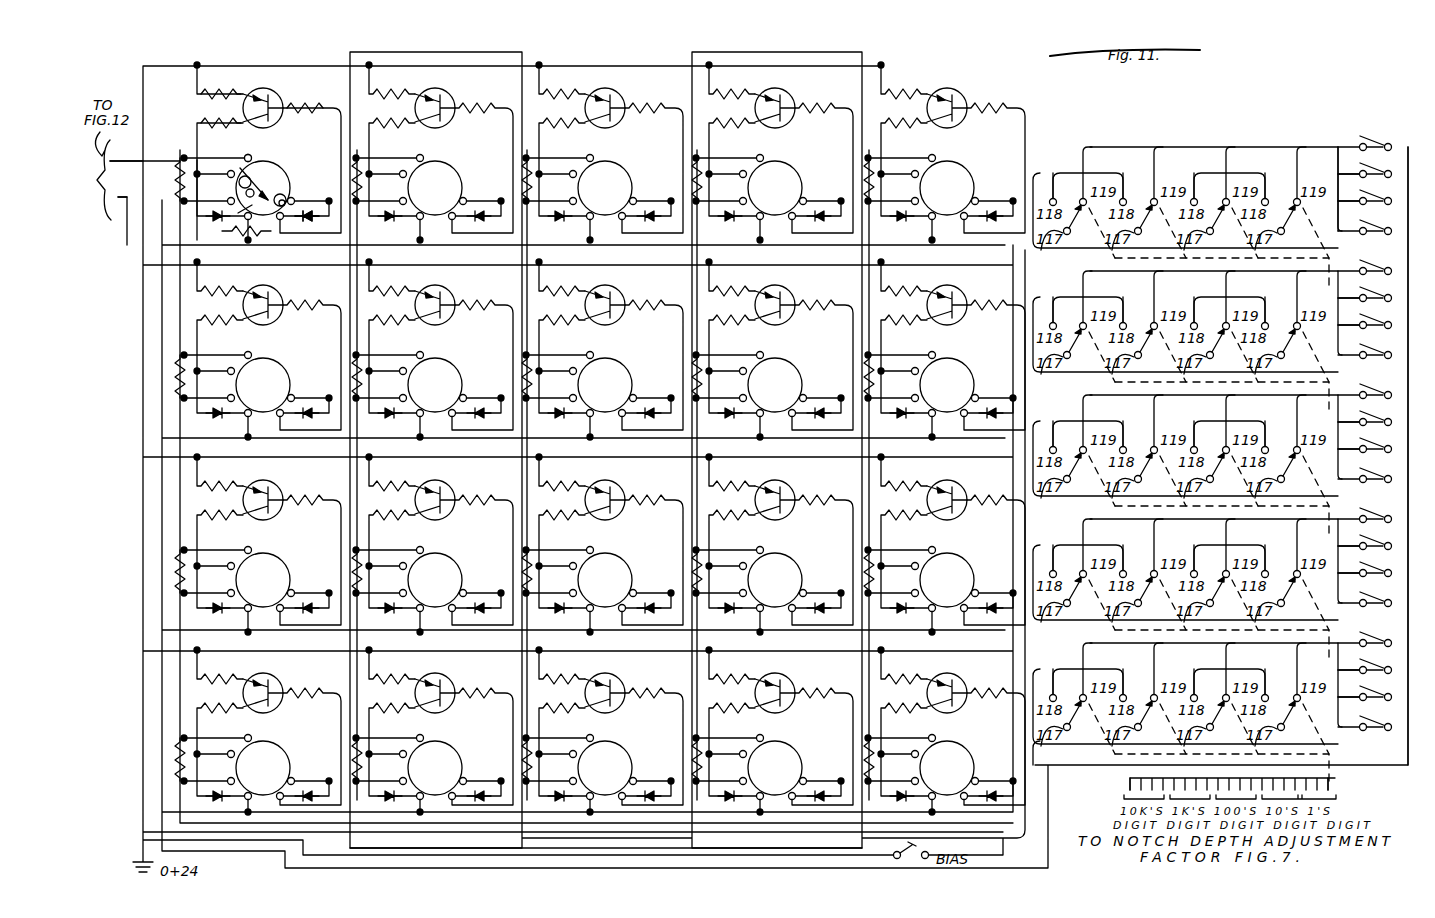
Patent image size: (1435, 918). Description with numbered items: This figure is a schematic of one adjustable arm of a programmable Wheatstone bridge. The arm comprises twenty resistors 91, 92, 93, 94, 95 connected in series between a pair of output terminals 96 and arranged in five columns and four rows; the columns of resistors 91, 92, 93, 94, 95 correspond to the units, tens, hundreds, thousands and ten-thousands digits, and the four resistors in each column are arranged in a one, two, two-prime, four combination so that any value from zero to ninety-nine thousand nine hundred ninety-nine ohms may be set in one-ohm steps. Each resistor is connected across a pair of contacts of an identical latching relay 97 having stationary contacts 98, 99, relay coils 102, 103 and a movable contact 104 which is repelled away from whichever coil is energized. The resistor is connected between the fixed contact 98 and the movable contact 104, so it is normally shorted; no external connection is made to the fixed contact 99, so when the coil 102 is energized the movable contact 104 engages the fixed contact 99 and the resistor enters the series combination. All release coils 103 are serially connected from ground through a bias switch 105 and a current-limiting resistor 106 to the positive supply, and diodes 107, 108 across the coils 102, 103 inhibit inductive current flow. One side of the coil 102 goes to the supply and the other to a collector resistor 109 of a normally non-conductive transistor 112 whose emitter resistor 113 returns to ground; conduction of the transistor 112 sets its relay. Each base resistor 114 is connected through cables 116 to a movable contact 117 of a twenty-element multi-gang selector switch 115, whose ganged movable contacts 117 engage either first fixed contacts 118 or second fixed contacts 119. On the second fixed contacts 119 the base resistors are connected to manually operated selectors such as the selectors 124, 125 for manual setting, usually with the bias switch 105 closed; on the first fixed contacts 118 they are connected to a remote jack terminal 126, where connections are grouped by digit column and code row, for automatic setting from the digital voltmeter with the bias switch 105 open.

The resistor 91 is at (871, 158).
The resistor 92 is at (699, 158).
The resistor 93 is at (529, 158).
The resistor 94 is at (359, 158).
The resistor 95 is at (178, 192).
The output terminal 96 is at (117, 160).
The relay 97 is at (611, 470).
The fixed contact 98 is at (230, 190).
The fixed contact 99 is at (278, 176).
The relay coil 102 is at (238, 212).
The relay coil 103 is at (288, 194).
The movable contact 104 is at (260, 152).
The bias switch 105 is at (902, 855).
The current-limiting resistor 106 is at (266, 240).
The diode 107 is at (194, 219).
The diode 108 is at (305, 220).
The collector resistor 109 is at (202, 122).
The transistor 112 is at (616, 393).
The emitter resistor 113 is at (225, 94).
The base resistor 114 is at (300, 110).
The selector switch 115 is at (1337, 732).
The cable 116 is at (350, 846).
The movable contact 117 is at (1212, 459).
The first fixed contact 118 is at (1212, 459).
The second fixed contact 119 is at (1212, 459).
The selector 124 is at (1137, 776).
The selector 125 is at (1408, 146).
The remote jack terminal 126 is at (1338, 783).